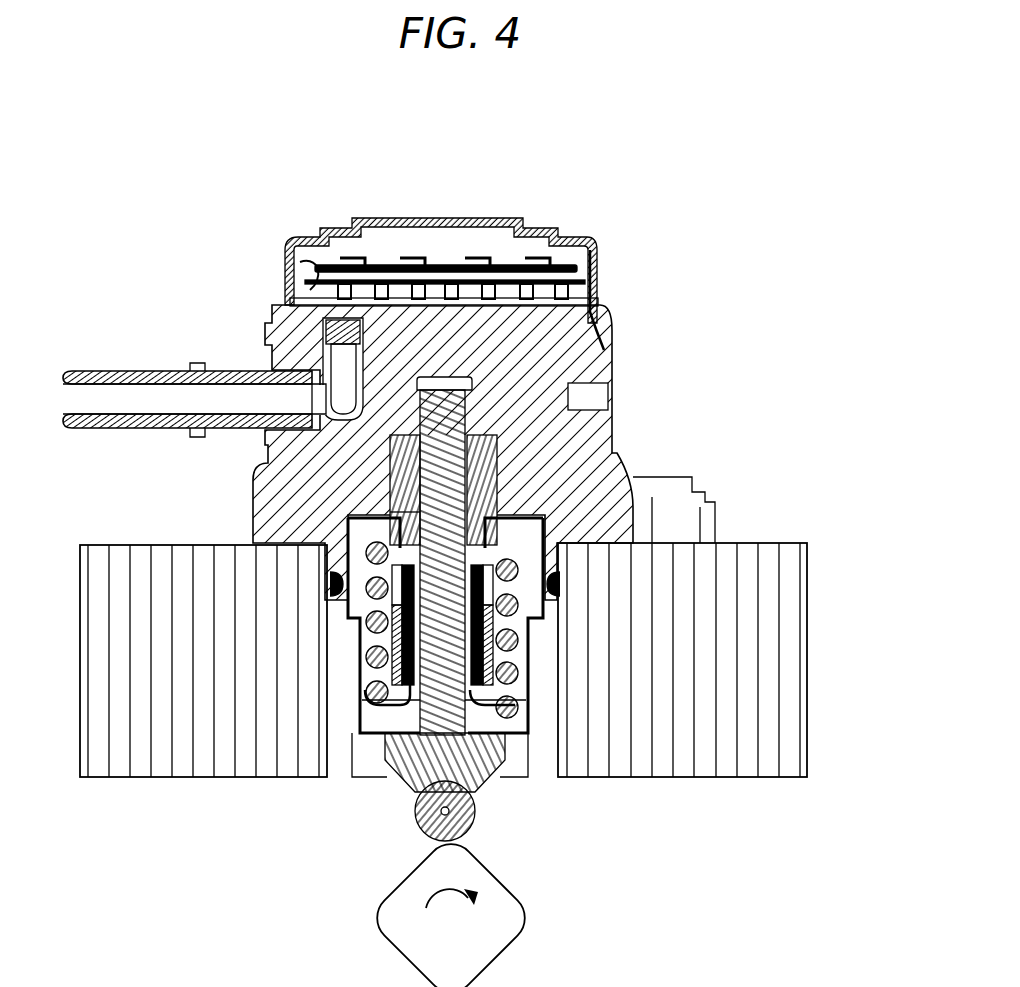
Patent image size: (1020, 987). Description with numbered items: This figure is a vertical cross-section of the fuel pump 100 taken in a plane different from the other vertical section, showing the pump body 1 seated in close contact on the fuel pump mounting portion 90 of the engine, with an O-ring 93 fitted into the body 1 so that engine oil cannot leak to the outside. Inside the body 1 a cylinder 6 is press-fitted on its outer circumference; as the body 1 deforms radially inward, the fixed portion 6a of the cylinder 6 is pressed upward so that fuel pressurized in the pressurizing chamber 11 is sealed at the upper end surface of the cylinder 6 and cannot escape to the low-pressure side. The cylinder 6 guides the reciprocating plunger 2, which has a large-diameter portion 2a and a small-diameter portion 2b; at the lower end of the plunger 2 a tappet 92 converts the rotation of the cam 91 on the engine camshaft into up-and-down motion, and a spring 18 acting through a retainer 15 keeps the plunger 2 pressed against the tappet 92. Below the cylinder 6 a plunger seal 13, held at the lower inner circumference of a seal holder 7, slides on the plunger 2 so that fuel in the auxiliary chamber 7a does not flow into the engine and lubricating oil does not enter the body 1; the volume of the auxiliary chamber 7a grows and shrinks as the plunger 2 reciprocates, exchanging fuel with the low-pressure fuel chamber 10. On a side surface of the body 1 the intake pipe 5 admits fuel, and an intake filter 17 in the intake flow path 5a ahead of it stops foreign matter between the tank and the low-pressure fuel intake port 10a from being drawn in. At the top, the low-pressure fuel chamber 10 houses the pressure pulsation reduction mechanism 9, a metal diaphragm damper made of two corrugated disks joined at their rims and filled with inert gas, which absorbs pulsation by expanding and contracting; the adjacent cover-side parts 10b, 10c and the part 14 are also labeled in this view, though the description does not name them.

The high-pressure fuel pump 100 is at (426, 212).
The body 1 is at (561, 326).
The plunger 2 is at (744, 786).
The large-diameter portion 2a is at (527, 605).
The small-diameter portion 2b is at (520, 648).
The intake pipe 5 is at (256, 376).
The intake flow path 5a is at (317, 393).
The cylinder 6 is at (398, 458).
The fixed portion 6a is at (380, 512).
The seal holder 7 is at (366, 603).
The auxiliary chamber 7a is at (388, 700).
The pressure pulsation reduction mechanism 9 is at (336, 268).
The low-pressure fuel chamber 10 is at (546, 291).
The low-pressure fuel intake port 10a is at (146, 392).
The cover upper portion 10b is at (514, 250).
The cover plate 10c is at (519, 283).
The pressurizing chamber 11 is at (448, 377).
The plunger seal 13 is at (485, 657).
The cover side wall 14 is at (596, 263).
The retainer 15 is at (510, 748).
The intake filter 17 is at (335, 362).
The spring 18 is at (395, 600).
The fuel pump mounting portion 90 is at (192, 720).
The cam 91 is at (500, 912).
The tappet 92 is at (479, 778).
The O-ring 93 is at (334, 582).